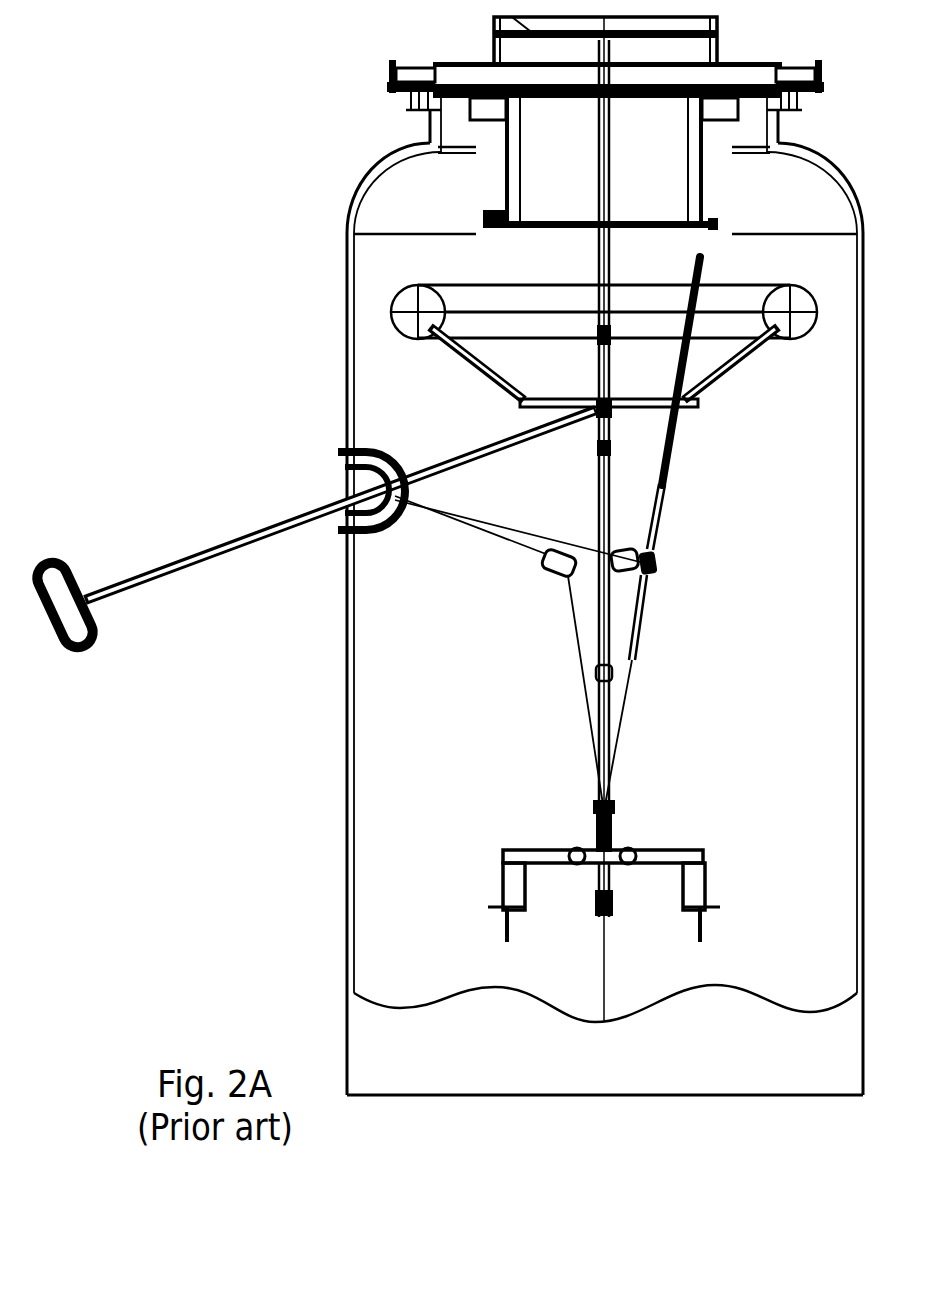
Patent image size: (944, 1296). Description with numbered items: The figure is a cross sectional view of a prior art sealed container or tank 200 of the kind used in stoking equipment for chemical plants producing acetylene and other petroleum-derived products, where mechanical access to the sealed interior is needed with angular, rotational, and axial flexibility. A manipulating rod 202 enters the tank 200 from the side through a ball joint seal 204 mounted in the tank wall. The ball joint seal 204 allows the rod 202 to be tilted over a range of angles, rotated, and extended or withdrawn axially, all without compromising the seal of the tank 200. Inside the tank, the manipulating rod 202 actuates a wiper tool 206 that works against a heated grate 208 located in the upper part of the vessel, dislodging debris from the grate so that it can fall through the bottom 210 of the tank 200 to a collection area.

The tank 200 is at (787, 691).
The manipulating rod 202 is at (184, 556).
The ball joint seal 204 is at (344, 470).
The wiper tool 206 is at (670, 508).
The heated grate 208 is at (568, 230).
The bottom 210 is at (717, 1058).